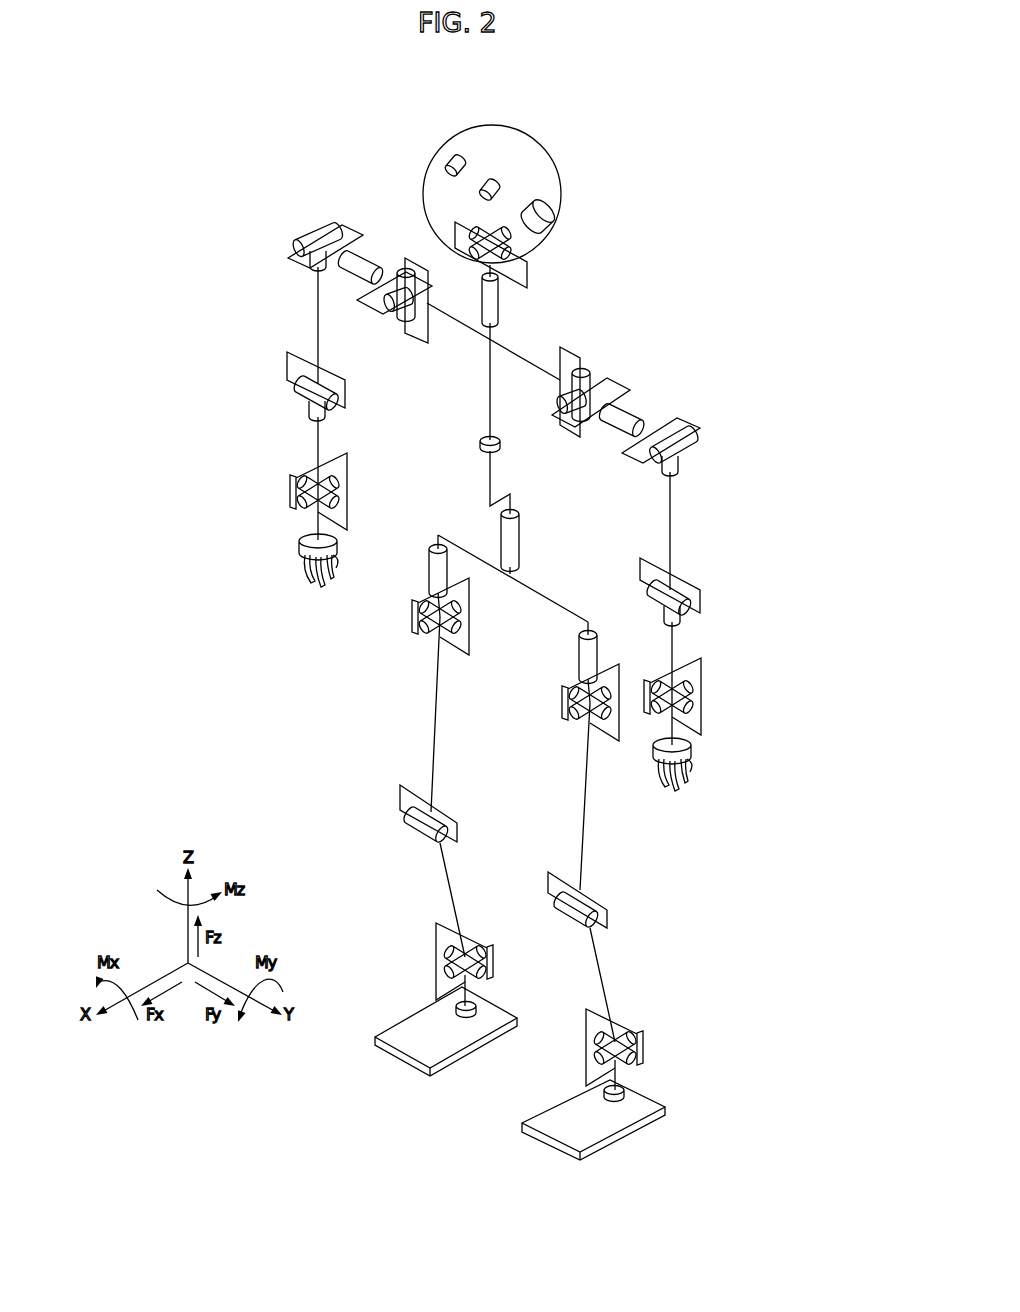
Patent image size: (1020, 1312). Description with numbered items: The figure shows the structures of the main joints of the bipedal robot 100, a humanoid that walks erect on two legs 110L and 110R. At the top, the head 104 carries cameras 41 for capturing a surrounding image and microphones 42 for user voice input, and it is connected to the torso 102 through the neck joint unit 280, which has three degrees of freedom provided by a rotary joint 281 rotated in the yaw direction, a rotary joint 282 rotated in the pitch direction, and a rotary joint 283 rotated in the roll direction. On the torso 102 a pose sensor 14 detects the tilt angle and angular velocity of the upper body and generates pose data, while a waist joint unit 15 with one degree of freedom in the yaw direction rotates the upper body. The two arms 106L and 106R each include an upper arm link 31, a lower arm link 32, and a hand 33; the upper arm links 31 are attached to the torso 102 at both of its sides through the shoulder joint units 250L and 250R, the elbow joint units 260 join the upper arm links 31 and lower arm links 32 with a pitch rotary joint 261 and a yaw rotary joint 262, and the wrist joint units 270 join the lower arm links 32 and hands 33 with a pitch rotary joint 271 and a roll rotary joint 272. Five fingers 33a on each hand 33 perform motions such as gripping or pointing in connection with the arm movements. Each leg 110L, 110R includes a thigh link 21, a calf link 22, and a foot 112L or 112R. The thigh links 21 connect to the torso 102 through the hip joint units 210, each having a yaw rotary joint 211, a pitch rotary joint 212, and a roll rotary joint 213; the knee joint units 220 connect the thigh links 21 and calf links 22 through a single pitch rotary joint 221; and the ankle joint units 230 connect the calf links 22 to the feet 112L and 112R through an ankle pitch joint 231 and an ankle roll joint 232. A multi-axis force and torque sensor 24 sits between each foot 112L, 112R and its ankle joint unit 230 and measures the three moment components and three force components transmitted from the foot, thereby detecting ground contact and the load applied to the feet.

The robot 100 is at (760, 130).
The torso 102 is at (490, 389).
The head 104 is at (565, 140).
The right arm 106R is at (210, 372).
The left arm 106L is at (765, 564).
The right leg 110R is at (338, 760).
The left leg 110L is at (652, 848).
The right foot 112R is at (400, 1053).
The left foot 112L is at (547, 1138).
The pose sensor 14 is at (500, 444).
The waist joint unit 15 is at (520, 532).
The thigh link 21 is at (432, 733).
The calf link 22 is at (440, 884).
The multi-axis force and torque sensor 24 is at (472, 1017).
The upper arm link 31 is at (316, 304).
The lower arm link 32 is at (316, 435).
The hand 33 is at (290, 561).
The fingers 33a is at (316, 585).
The cameras 41 is at (482, 197).
The microphones 42 is at (550, 207).
The hip joint unit 210 is at (405, 626).
The rotary joint 211 is at (433, 577).
The rotary joint 212 is at (462, 627).
The rotary joint 213 is at (424, 631).
The knee joint unit 220 is at (388, 833).
The rotary joint 221 is at (431, 822).
The ankle joint unit 230 is at (418, 957).
The ankle pitch joint 231 is at (488, 969).
The ankle roll joint 232 is at (472, 947).
The right shoulder joint unit 250R is at (314, 205).
The left shoulder joint unit 250L is at (645, 371).
The elbow joint unit 260 is at (275, 350).
The rotary joint 261 is at (318, 391).
The rotary joint 262 is at (323, 409).
The wrist joint unit 270 is at (278, 510).
The rotary joint 271 is at (338, 501).
The rotary joint 272 is at (337, 486).
The neck joint unit 280 is at (560, 284).
The rotary joint 281 is at (495, 303).
The rotary joint 282 is at (513, 244).
The rotary joint 283 is at (473, 249).